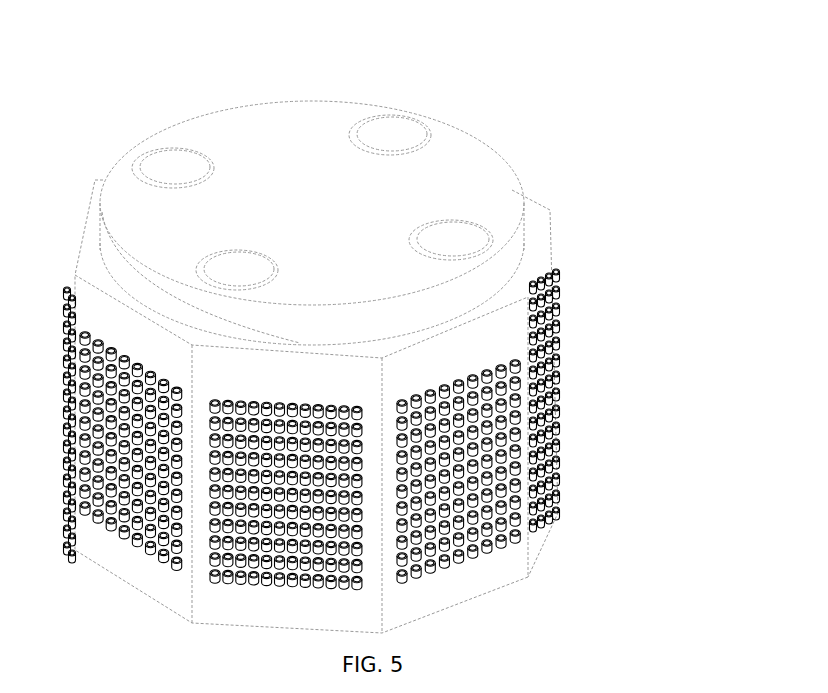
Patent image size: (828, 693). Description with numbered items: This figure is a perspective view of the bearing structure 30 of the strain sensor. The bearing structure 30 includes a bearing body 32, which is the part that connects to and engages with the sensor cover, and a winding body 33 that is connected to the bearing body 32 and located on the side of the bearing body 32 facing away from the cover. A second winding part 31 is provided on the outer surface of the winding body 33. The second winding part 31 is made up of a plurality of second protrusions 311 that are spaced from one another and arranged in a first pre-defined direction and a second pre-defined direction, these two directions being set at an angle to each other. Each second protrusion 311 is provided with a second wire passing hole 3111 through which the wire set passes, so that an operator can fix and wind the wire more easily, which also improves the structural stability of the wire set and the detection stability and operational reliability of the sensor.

The bearing structure 30 is at (298, 120).
The second winding part 31 is at (627, 420).
The second protrusion 311 is at (557, 368).
The second wire passing hole 3111 is at (515, 530).
The bearing body 32 is at (472, 172).
The winding body 33 is at (545, 257).